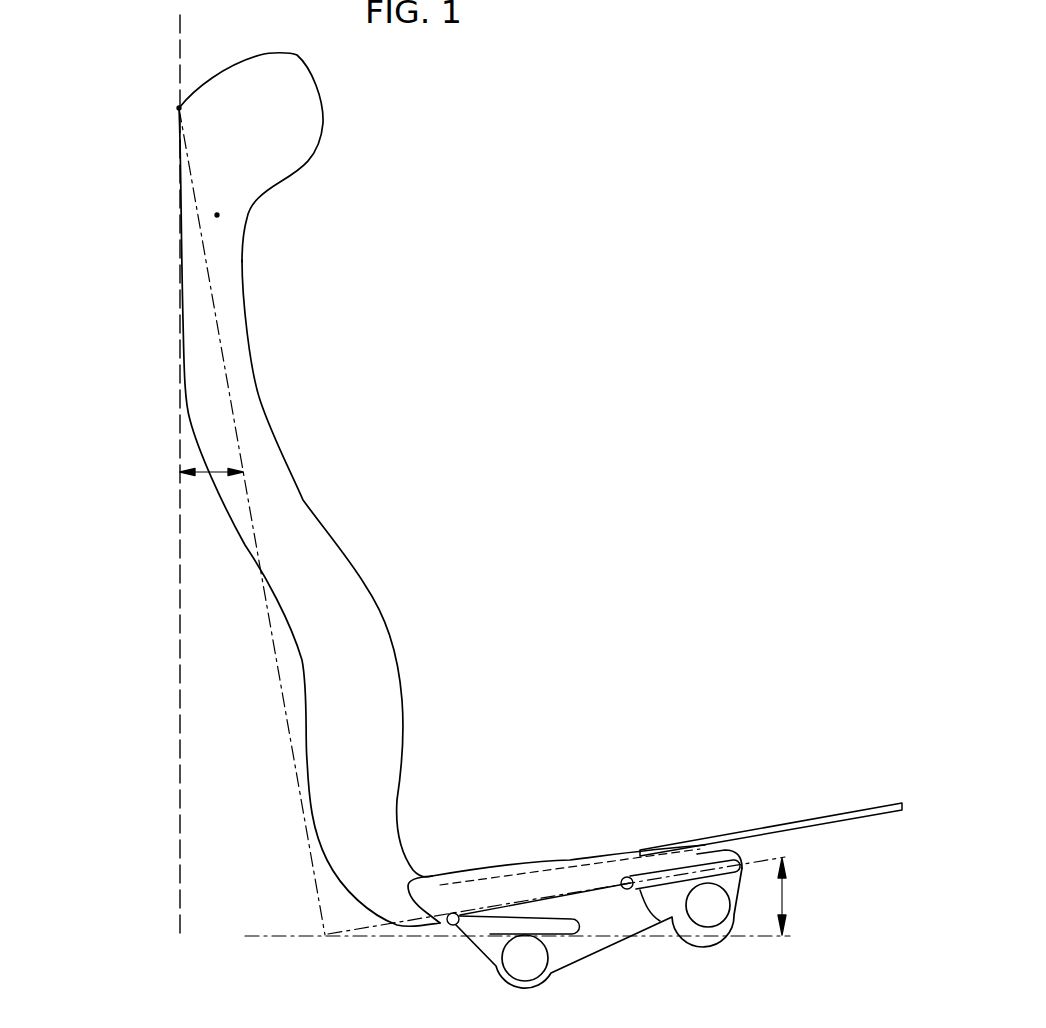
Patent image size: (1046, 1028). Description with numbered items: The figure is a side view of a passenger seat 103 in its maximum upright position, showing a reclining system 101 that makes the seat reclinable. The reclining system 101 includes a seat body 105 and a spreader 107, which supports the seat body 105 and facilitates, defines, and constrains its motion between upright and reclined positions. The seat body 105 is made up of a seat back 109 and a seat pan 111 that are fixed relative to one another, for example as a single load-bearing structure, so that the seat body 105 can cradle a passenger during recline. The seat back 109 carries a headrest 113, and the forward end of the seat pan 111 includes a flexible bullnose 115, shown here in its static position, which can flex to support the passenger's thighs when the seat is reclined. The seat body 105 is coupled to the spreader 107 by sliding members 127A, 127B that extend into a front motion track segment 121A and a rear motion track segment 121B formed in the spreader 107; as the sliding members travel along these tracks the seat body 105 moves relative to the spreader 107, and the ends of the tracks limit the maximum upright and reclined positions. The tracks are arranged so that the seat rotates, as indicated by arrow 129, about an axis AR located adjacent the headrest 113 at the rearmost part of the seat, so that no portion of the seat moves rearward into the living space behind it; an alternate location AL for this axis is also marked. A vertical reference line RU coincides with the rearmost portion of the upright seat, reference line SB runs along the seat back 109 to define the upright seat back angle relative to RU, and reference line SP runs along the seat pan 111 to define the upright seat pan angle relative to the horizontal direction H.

The reclining system 101 is at (445, 152).
The passenger seat 103 is at (445, 239).
The seat body 105 is at (445, 326).
The spreader 107 is at (600, 951).
The seat back 109 is at (303, 493).
The seat pan 111 is at (527, 873).
The headrest 113 is at (317, 90).
The flexible bullnose 115 is at (857, 812).
The front motion track segment 121A is at (697, 857).
The rear motion track segment 121B is at (478, 934).
The sliding member 127A is at (638, 889).
The sliding member 127B is at (448, 925).
The arrow 129 is at (136, 136).
The reference line RU is at (182, 34).
The axis AR is at (181, 108).
The alternate location AL is at (217, 215).
The reference line SB is at (272, 632).
The reference line SP is at (593, 890).
The horizontal direction H is at (283, 937).